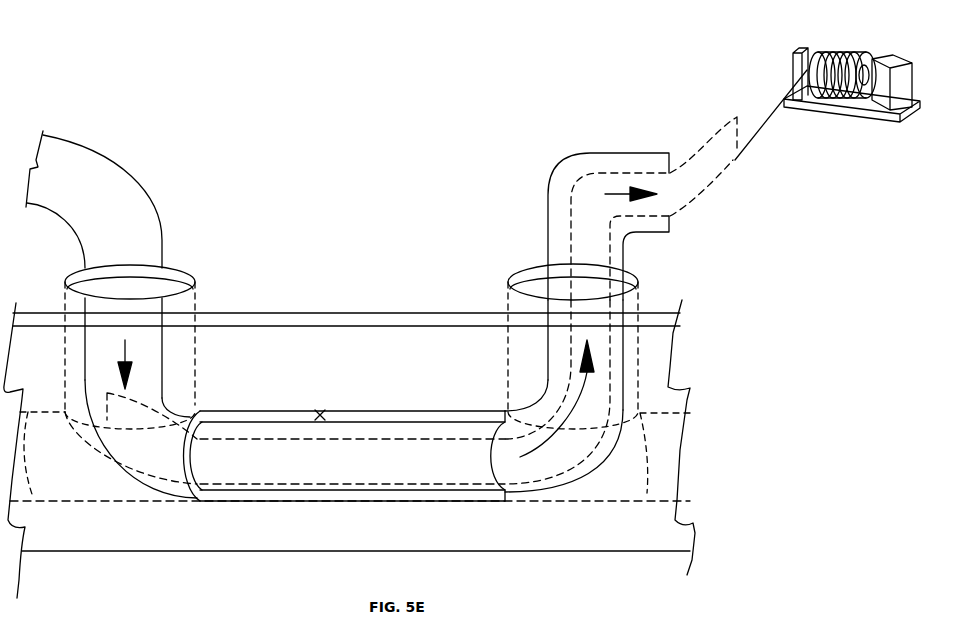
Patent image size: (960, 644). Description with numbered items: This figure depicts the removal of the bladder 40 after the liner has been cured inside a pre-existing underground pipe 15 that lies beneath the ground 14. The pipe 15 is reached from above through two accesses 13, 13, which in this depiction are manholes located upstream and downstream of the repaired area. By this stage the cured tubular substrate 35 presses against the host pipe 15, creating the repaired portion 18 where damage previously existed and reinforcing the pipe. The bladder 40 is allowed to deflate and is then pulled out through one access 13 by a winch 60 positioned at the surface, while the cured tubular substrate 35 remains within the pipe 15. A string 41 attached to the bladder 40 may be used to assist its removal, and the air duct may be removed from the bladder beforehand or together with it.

The access 13 is at (182, 277).
The ground 14 is at (285, 312).
The pipe 15 is at (385, 410).
The repaired portion 18 is at (322, 415).
The cured tubular substrate 35 is at (132, 172).
The bladder 40 is at (334, 469).
The string 41 is at (778, 100).
The winch 60 is at (852, 50).